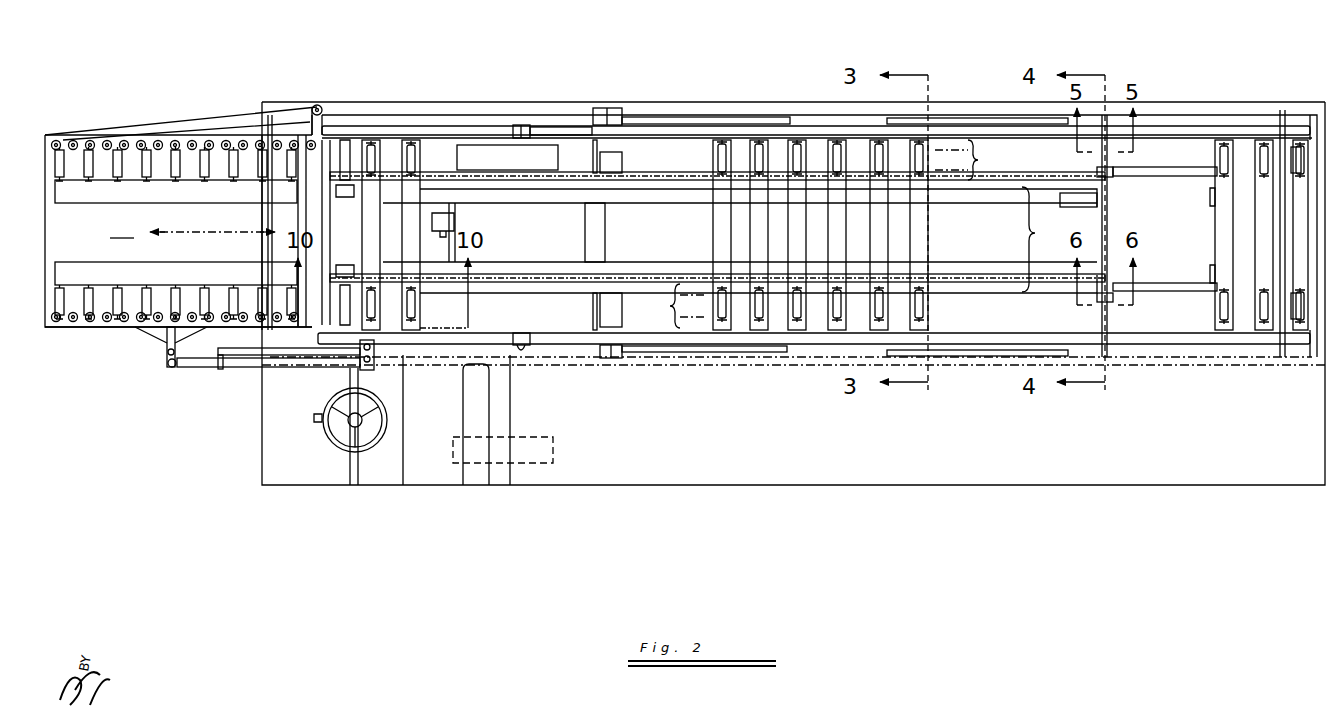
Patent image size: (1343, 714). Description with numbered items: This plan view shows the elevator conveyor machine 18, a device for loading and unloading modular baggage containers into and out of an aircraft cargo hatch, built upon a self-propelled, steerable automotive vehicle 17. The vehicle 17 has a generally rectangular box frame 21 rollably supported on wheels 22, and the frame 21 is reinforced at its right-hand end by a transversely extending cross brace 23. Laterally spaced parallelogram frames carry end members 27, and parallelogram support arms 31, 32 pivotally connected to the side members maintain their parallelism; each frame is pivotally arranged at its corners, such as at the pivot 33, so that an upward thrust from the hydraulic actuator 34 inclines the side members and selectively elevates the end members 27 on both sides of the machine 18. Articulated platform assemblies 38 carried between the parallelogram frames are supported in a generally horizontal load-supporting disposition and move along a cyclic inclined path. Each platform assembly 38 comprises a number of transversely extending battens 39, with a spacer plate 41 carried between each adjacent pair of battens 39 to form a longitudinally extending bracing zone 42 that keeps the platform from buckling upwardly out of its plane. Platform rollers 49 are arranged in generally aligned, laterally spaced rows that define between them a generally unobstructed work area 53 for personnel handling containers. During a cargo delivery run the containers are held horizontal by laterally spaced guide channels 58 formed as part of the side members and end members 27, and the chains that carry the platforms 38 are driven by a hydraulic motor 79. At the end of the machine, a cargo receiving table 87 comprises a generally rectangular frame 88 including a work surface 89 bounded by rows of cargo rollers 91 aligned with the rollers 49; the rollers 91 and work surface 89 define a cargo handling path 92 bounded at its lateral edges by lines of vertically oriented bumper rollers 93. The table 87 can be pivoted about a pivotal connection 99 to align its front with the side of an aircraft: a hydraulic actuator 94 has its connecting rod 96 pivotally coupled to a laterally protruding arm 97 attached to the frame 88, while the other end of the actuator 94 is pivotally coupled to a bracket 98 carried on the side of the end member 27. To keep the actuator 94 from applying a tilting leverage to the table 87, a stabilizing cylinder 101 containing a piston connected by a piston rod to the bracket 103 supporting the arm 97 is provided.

The automotive vehicle 17 is at (258, 445).
The elevator conveyor machine 18 is at (762, 380).
The box frame 21 is at (712, 112).
The wheels 22 is at (560, 157).
The cross brace 23 is at (1310, 112).
The end member 27 is at (450, 126).
The parallelogram support arm 31 is at (656, 116).
The parallelogram support arm 32 is at (988, 117).
The pivot 33 is at (520, 125).
The hydraulic actuator 34 is at (612, 231).
The articulated platform assembly 38 is at (430, 172).
The batten 39 is at (407, 218).
The spacer plate 41 is at (784, 173).
The bracing zone 42 is at (645, 297).
The platform roller 49 is at (416, 157).
The work area 53 is at (1038, 239).
The guide channel 58 is at (548, 126).
The hydraulic motor 79 is at (456, 221).
The cargo receiving table 87 is at (106, 336).
The rectangular frame 88 is at (46, 234).
The work surface 89 is at (122, 230).
The cargo roller 91 is at (220, 162).
The cargo handling path 92 is at (212, 230).
The bumper roller 93 is at (143, 140).
The hydraulic actuator 94 is at (243, 370).
The connecting rod 96 is at (200, 370).
The arm 97 is at (166, 366).
The bracket 98 is at (374, 368).
The pivotal connection 99 is at (320, 106).
The stabilizing cylinder 101 is at (242, 349).
The bracket 103 is at (166, 349).